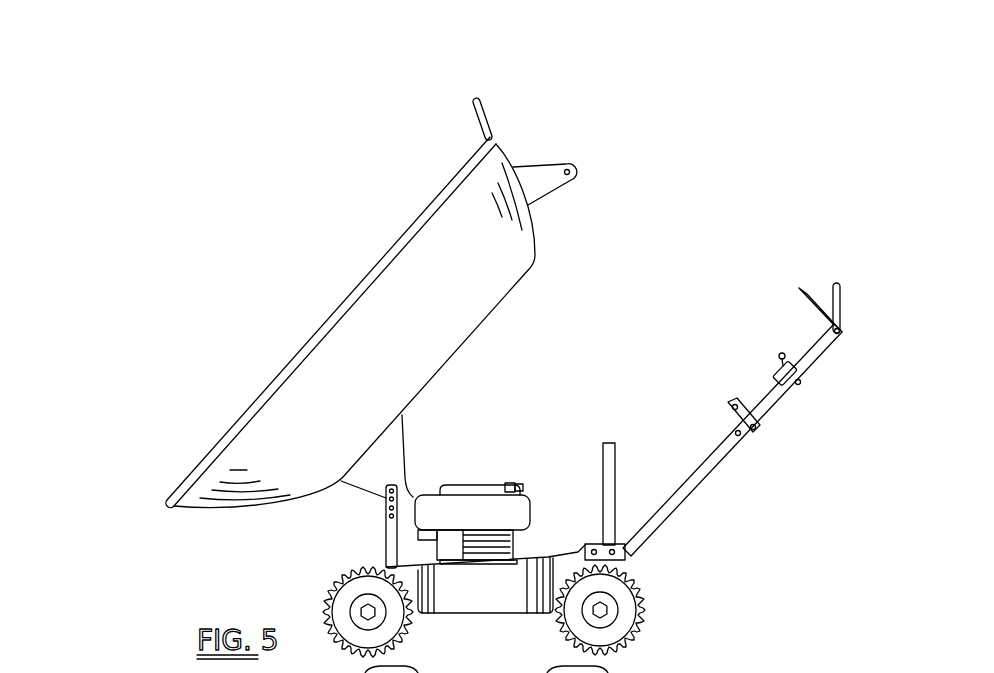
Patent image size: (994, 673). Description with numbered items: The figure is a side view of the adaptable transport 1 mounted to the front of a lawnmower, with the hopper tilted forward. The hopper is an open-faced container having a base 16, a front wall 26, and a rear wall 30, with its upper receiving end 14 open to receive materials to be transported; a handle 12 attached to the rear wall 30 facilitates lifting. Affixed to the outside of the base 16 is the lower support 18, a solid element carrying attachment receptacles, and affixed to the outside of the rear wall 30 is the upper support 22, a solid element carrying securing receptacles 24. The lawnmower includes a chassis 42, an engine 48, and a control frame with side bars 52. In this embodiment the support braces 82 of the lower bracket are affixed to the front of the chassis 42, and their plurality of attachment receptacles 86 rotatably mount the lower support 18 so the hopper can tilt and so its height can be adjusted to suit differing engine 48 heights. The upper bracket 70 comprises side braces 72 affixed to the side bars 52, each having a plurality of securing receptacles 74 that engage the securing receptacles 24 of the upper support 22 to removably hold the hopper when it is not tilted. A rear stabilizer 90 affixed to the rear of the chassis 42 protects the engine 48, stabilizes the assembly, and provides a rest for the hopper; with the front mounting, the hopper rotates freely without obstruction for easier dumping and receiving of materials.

The adaptable transport 1 is at (110, 429).
The handle 12 is at (477, 92).
The upper receiving end 14 is at (355, 282).
The base 16 is at (482, 332).
The lower support 18 is at (388, 443).
The upper support 22 is at (540, 160).
The securing receptacles 24 is at (577, 170).
The front wall 26 is at (235, 510).
The rear wall 30 is at (535, 233).
The chassis 42 is at (493, 601).
The engine 48 is at (490, 521).
The side bars 52 is at (677, 500).
The upper bracket 70 is at (765, 419).
The side braces 72 is at (763, 413).
The securing receptacles 74 is at (733, 403).
The support braces 82 is at (385, 530).
The attachment receptacles 86 is at (383, 505).
The rear stabilizer 90 is at (617, 457).